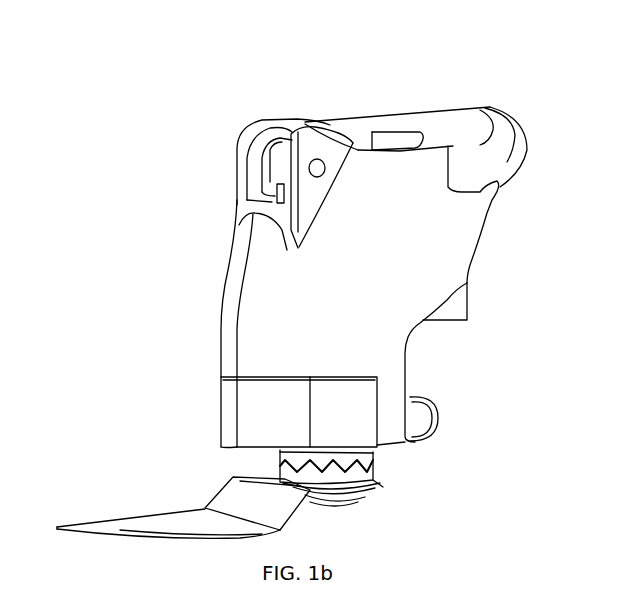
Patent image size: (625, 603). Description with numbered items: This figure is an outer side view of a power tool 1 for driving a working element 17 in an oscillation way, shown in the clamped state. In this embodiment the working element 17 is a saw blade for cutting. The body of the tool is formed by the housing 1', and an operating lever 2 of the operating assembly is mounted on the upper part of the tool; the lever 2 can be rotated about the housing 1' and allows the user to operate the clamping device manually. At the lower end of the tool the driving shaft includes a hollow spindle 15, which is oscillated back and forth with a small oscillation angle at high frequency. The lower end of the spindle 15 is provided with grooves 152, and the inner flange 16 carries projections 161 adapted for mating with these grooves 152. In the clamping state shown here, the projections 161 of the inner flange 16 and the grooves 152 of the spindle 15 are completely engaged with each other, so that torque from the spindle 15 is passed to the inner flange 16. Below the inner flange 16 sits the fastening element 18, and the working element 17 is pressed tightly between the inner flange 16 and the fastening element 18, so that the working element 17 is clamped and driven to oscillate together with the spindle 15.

The power tool 1 is at (320, 277).
The housing 1' is at (212, 324).
The operating lever 2 is at (424, 127).
The hollow spindle 15 is at (372, 456).
The grooves 152 is at (285, 458).
The projections 161 is at (283, 467).
The inner flange 16 is at (380, 476).
The working element 17 is at (140, 527).
The fastening element 18 is at (368, 497).